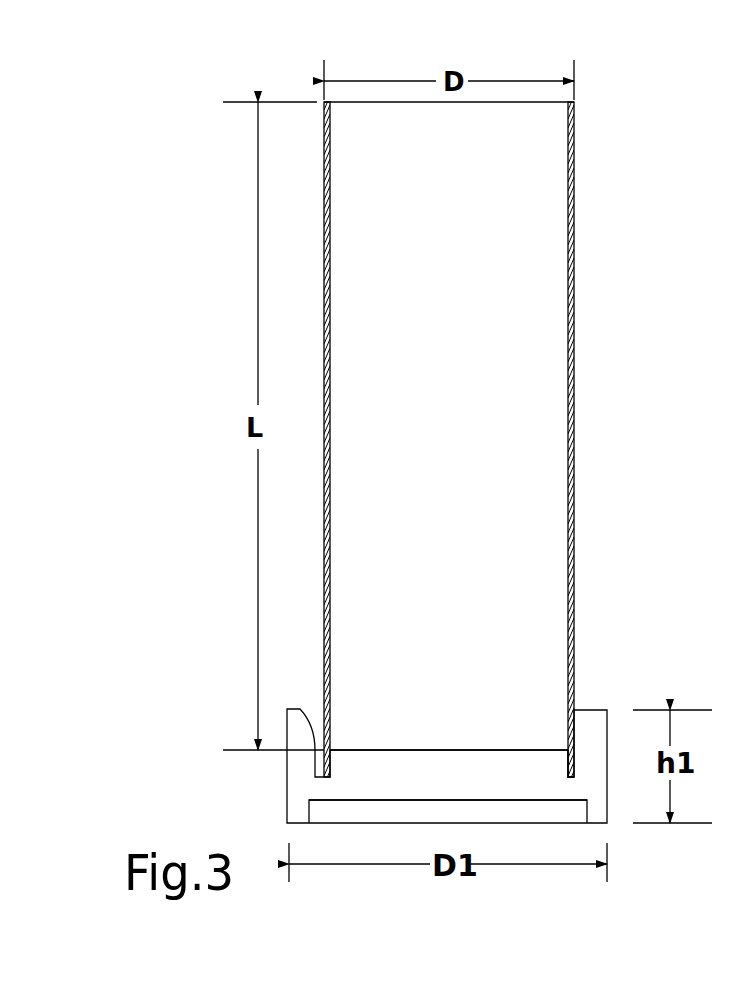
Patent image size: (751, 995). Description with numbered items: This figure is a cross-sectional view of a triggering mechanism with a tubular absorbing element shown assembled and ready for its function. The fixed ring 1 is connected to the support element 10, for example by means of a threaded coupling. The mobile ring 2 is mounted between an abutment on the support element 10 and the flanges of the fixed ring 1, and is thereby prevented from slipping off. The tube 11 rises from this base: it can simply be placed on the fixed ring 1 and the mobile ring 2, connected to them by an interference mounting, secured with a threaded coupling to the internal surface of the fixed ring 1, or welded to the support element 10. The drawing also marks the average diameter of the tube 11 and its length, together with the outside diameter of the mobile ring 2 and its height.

The fixed ring 1 is at (577, 737).
The mobile ring 2 is at (600, 778).
The support element 10 is at (525, 782).
The tube 11 is at (574, 409).